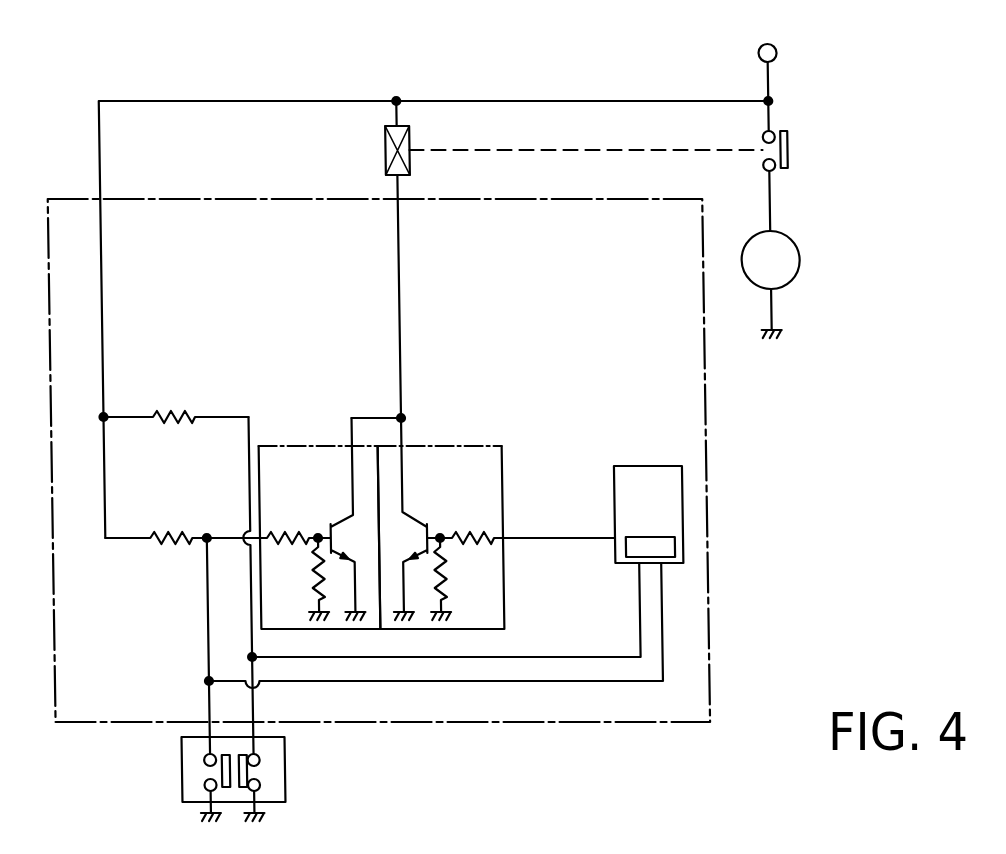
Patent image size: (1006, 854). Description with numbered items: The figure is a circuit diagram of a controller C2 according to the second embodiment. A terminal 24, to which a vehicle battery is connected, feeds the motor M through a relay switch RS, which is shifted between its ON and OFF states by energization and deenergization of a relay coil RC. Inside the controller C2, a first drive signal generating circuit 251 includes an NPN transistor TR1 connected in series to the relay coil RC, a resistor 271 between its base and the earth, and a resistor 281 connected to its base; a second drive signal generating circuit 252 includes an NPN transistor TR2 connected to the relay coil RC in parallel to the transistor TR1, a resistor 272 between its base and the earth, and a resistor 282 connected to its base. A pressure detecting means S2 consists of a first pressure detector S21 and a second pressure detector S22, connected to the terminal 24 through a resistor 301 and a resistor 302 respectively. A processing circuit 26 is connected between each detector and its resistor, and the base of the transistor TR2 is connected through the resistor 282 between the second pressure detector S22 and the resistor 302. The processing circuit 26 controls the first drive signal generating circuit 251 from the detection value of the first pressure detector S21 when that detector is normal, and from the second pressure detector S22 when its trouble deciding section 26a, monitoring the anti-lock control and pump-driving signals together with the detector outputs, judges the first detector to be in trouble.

The terminal 24 is at (783, 52).
The relay coil RC is at (390, 150).
The relay switch RS is at (792, 146).
The motor M is at (803, 262).
The resistor 301 is at (160, 413).
The resistor 302 is at (150, 536).
The first drive signal generating circuit 251 is at (483, 446).
The second drive signal generating circuit 252 is at (275, 446).
The transistor TR1 is at (427, 527).
The transistor TR2 is at (329, 527).
The resistor 281 is at (468, 527).
The resistor 282 is at (287, 527).
The resistor 271 is at (445, 578).
The resistor 272 is at (310, 568).
The processing circuit 26 is at (656, 530).
The trouble deciding section 26a is at (630, 552).
The controller C2 is at (708, 585).
The pressure detecting means S2 is at (233, 792).
The first pressure detector S21 is at (242, 772).
The second pressure detector S22 is at (217, 772).